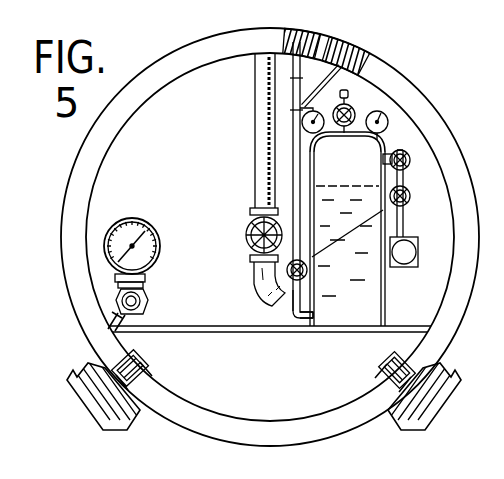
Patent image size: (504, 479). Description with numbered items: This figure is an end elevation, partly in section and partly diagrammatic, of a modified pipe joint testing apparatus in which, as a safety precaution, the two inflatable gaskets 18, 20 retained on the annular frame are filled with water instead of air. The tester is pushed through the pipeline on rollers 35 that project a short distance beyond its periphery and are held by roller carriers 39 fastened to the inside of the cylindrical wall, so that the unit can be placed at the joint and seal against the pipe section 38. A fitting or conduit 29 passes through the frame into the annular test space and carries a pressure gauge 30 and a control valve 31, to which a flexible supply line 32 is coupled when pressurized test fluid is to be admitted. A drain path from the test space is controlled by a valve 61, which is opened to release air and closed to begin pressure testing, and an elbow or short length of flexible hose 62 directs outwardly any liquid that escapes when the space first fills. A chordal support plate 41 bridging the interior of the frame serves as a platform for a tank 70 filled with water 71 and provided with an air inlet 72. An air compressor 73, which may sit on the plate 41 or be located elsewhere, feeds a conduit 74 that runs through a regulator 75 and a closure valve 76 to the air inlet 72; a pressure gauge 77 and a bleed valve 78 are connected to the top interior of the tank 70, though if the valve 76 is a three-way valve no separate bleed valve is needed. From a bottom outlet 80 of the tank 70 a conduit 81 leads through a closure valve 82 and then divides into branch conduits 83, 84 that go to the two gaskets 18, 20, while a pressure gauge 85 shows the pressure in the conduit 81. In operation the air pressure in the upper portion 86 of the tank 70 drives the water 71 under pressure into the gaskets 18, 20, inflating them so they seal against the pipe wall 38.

The gasket 18 is at (310, 32).
The gasket 20 is at (352, 46).
The fitting or conduit 29 is at (114, 300).
The pressure gauge 30 is at (131, 200).
The control valve 31 is at (147, 285).
The flexible supply line 32 is at (149, 302).
The rollers 35 is at (134, 388).
The pipe section 38 is at (118, 422).
The roller carriers 39 is at (146, 356).
The chordal support plate 41 is at (268, 333).
The valve 61 is at (250, 222).
The elbow or short length of flexible hose 62 is at (262, 276).
The tank 70 is at (376, 290).
The water 71 is at (345, 230).
The air inlet 72 is at (384, 146).
The air compressor 73 is at (419, 252).
The conduit 74 is at (404, 222).
The regulator 75 is at (411, 196).
The closure valve 76 is at (411, 160).
The pressure gauge 77 is at (388, 120).
The bleed valve 78 is at (352, 107).
The bottom outlet 80 is at (313, 316).
The conduit 81 is at (296, 308).
The closure valve 82 is at (308, 268).
The branch conduit 83 is at (294, 78).
The branch conduit 84 is at (300, 90).
The pressure gauge 85 is at (322, 100).
The upper portion 86 is at (352, 174).